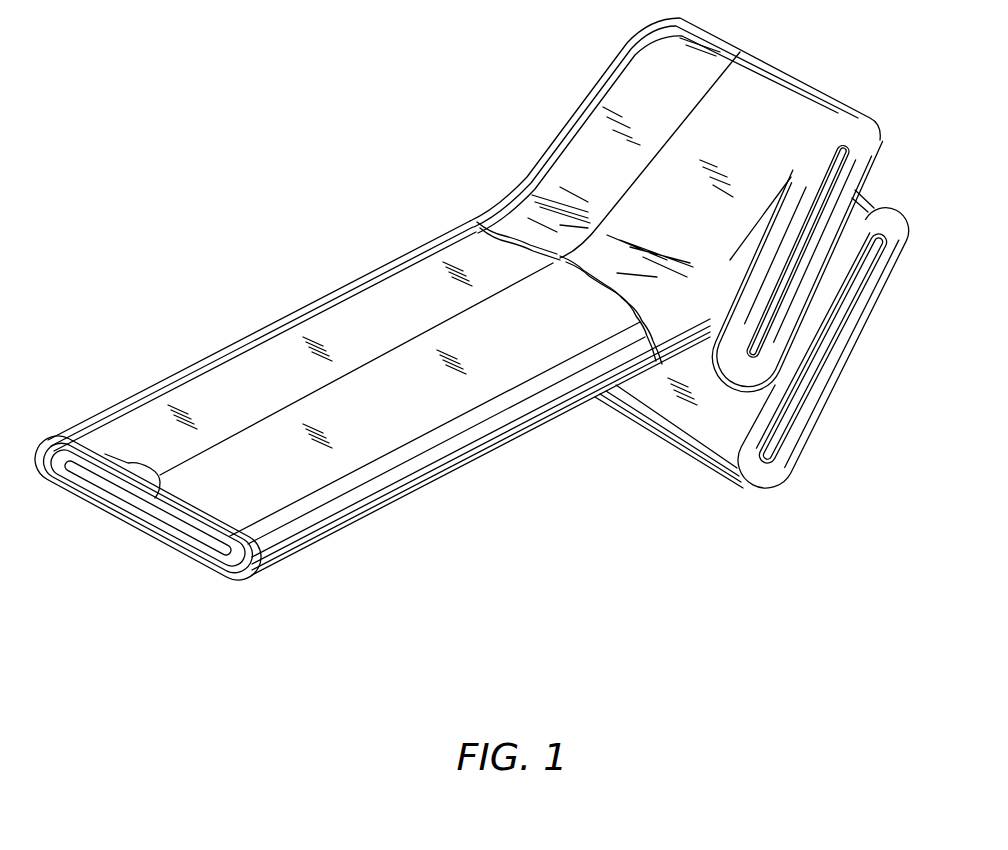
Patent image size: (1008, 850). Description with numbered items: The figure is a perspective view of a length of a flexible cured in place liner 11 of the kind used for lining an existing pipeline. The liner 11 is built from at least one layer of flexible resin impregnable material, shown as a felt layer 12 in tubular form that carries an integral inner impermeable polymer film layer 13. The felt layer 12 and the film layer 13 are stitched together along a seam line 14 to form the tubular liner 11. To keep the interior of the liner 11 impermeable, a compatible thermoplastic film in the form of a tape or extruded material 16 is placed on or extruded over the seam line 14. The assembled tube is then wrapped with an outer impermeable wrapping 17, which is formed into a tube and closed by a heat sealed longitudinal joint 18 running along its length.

The cured in place liner 11 is at (266, 256).
The felt layer 12 is at (55, 482).
The inner impermeable polymer film layer 13 is at (222, 553).
The seam line 14 is at (143, 507).
The tape or extruded material 16 is at (130, 498).
The outer impermeable wrapping 17 is at (212, 383).
The heat sealed longitudinal joint 18 is at (440, 323).